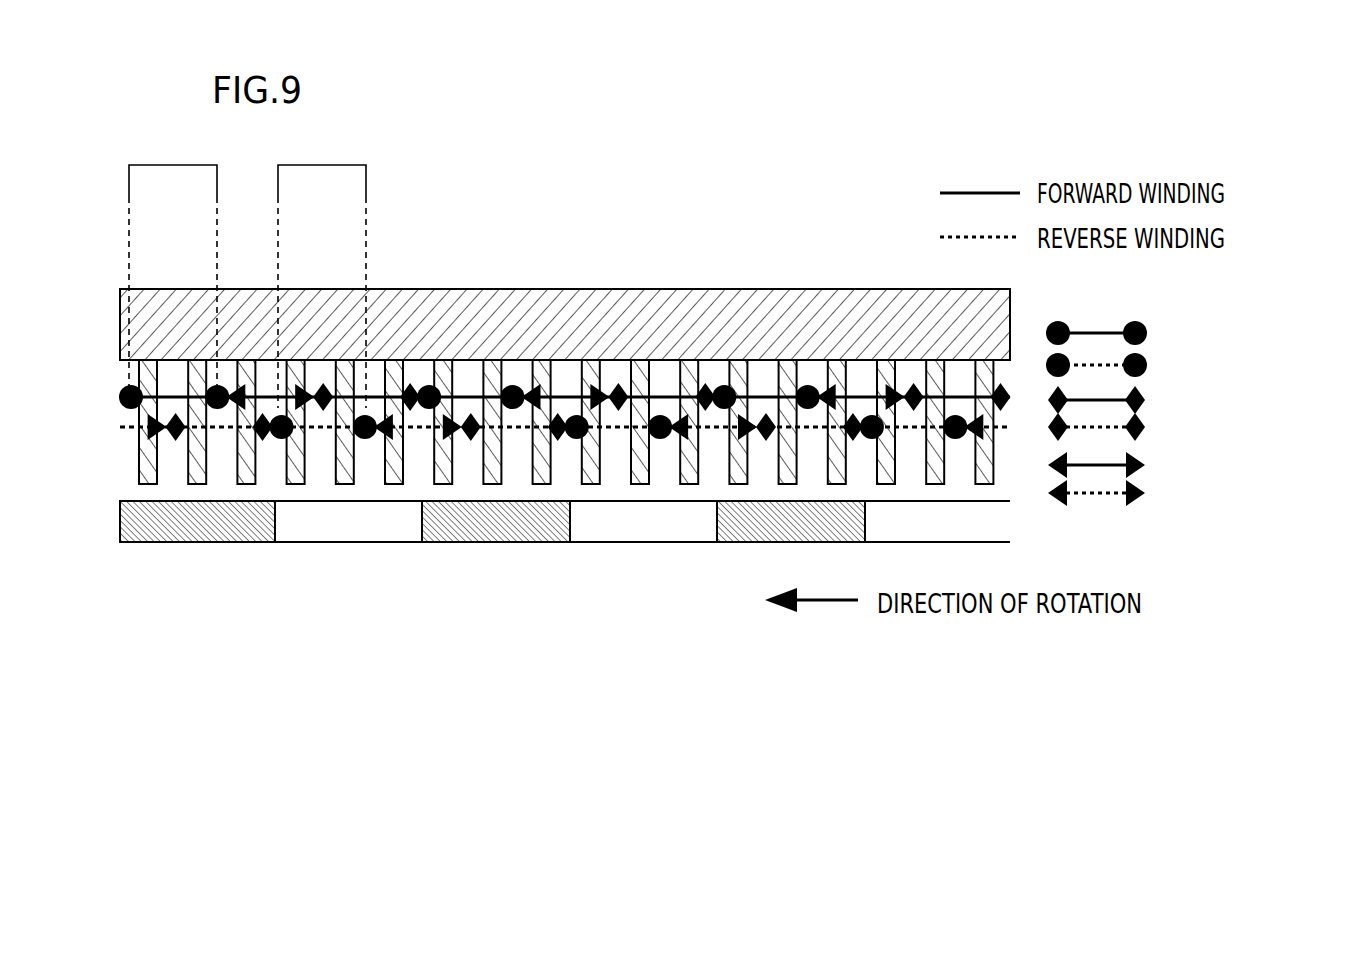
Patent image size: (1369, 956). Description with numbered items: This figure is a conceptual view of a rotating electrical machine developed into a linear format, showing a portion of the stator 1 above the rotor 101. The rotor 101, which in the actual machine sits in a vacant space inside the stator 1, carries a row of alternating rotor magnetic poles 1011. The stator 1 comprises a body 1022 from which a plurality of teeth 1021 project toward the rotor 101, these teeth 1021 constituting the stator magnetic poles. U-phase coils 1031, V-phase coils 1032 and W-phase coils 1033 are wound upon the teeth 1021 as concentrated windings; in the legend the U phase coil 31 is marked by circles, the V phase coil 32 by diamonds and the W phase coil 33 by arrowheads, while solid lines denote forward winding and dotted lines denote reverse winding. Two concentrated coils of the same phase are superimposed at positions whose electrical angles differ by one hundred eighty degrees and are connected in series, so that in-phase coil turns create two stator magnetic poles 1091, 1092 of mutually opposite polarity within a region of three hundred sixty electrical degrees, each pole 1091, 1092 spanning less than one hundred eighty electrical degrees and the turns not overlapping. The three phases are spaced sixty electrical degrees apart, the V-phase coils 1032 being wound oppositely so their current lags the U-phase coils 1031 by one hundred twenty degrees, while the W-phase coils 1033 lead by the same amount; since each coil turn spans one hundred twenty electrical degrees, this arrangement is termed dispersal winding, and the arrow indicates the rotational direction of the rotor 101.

The stator 1 is at (105, 289).
The rotor 101 is at (105, 501).
The stator magnetic pole 1091 is at (173, 269).
The stator magnetic pole 1092 is at (322, 269).
The U-phase coil 1031 is at (165, 392).
The V-phase coil 1032 is at (392, 392).
The W-phase coil 1033 is at (268, 392).
The yoke 1022 is at (641, 328).
The tooth 1021 is at (737, 392).
The rotor magnetic pole 1011 is at (542, 543).
The U phase coil 31 is at (1199, 349).
The V phase coil 32 is at (1200, 413).
The W phase coil 33 is at (1200, 479).